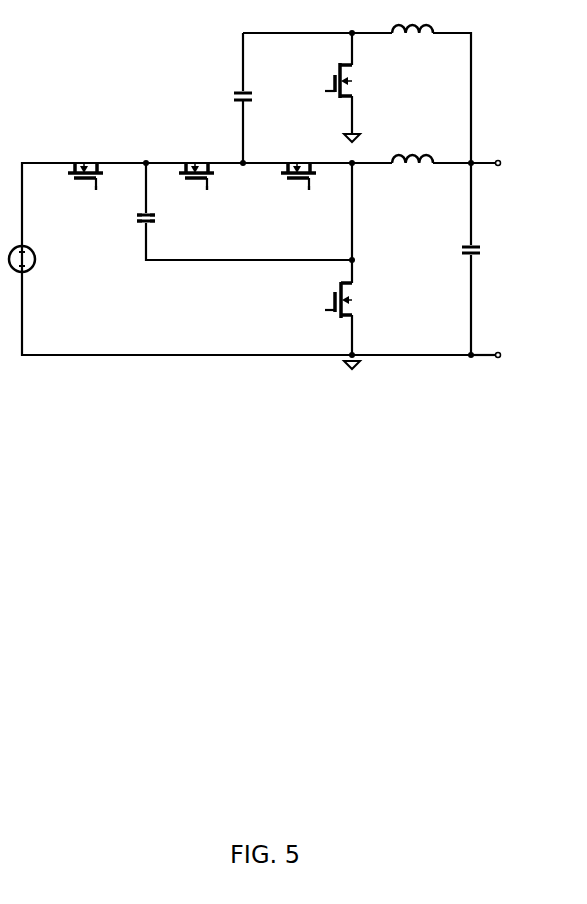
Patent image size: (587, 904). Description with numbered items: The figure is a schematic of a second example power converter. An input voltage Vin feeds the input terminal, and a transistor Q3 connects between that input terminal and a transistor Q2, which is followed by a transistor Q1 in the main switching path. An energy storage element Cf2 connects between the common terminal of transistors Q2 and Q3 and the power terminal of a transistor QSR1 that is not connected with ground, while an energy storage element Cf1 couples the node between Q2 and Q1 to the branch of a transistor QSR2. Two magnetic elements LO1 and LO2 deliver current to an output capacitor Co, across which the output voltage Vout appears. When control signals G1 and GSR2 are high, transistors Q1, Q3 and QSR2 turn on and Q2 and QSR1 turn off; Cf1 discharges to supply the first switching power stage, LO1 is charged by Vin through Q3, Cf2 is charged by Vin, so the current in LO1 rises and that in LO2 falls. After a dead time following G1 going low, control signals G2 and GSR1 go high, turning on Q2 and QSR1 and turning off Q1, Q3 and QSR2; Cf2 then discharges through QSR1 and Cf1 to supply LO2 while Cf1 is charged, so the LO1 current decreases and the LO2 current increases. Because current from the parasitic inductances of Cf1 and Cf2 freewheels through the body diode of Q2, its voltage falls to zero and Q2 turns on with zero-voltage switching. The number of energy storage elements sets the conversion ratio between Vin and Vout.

The input voltage Vin is at (39, 260).
The transistor Q1 is at (298, 165).
The transistor Q2 is at (196, 165).
The transistor Q3 is at (86, 165).
The control signal G1 is at (212, 200).
The control signal G2 is at (216, 200).
The energy storage element Cf1 is at (260, 113).
The energy storage element Cf2 is at (162, 219).
The transistor QSR1 is at (373, 301).
The transistor QSR2 is at (373, 82).
The control signal GSR1 is at (305, 307).
The control signal GSR2 is at (306, 89).
The magnetic element LO1 is at (416, 149).
The magnetic element LO2 is at (416, 20).
The output capacitor Co is at (452, 252).
The output voltage Vout is at (519, 252).